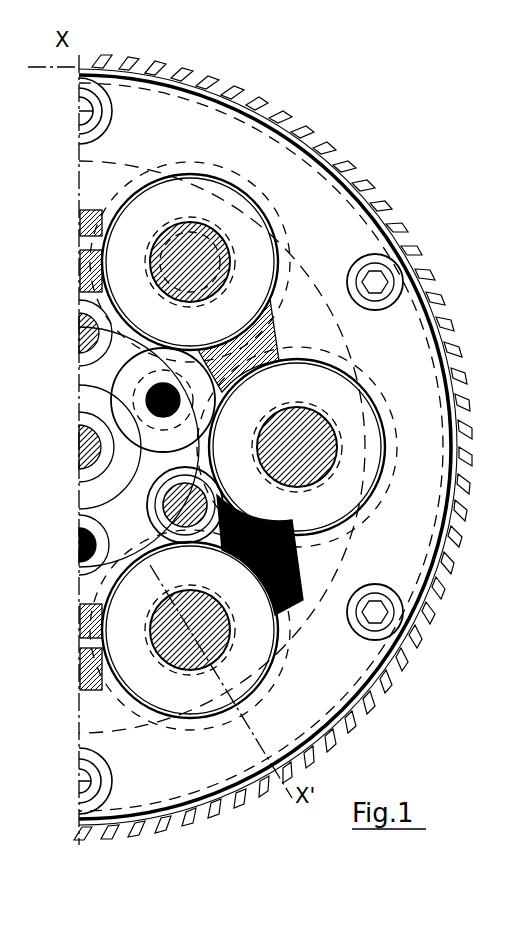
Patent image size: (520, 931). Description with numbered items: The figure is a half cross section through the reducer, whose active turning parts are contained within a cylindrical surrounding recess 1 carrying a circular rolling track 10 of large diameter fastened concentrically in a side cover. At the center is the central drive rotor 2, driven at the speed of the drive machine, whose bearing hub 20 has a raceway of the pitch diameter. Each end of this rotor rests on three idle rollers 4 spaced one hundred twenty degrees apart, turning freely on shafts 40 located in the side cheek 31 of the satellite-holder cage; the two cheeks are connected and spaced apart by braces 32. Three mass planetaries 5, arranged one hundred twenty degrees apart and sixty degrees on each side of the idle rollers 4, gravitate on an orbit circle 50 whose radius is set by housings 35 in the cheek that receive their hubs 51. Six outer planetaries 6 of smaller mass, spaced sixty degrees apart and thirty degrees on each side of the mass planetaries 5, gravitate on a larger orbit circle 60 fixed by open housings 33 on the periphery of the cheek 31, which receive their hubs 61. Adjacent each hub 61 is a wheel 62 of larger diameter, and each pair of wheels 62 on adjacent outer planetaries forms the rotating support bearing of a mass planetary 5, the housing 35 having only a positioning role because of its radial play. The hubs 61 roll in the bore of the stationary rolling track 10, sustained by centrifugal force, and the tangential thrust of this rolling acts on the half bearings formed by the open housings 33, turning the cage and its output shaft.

The cylindrical surrounding recess 1 is at (374, 141).
The circular rolling track 10 is at (300, 278).
The central drive rotor 2 is at (80, 438).
The bearing hub 20 is at (86, 418).
The idle roller 4 is at (150, 392).
The shaft 40 is at (166, 378).
The mass planetary 5 is at (88, 548).
The orbit circle 50 is at (155, 568).
The hub 51 is at (100, 515).
The outer planetary 6 is at (205, 130).
The orbit circle 60 is at (250, 247).
The hub 61 is at (232, 225).
The wheel 62 is at (212, 235).
The side cheek 31 is at (116, 688).
The brace 32 is at (118, 78).
The open housing 33 is at (150, 636).
The housing 35 is at (250, 560).